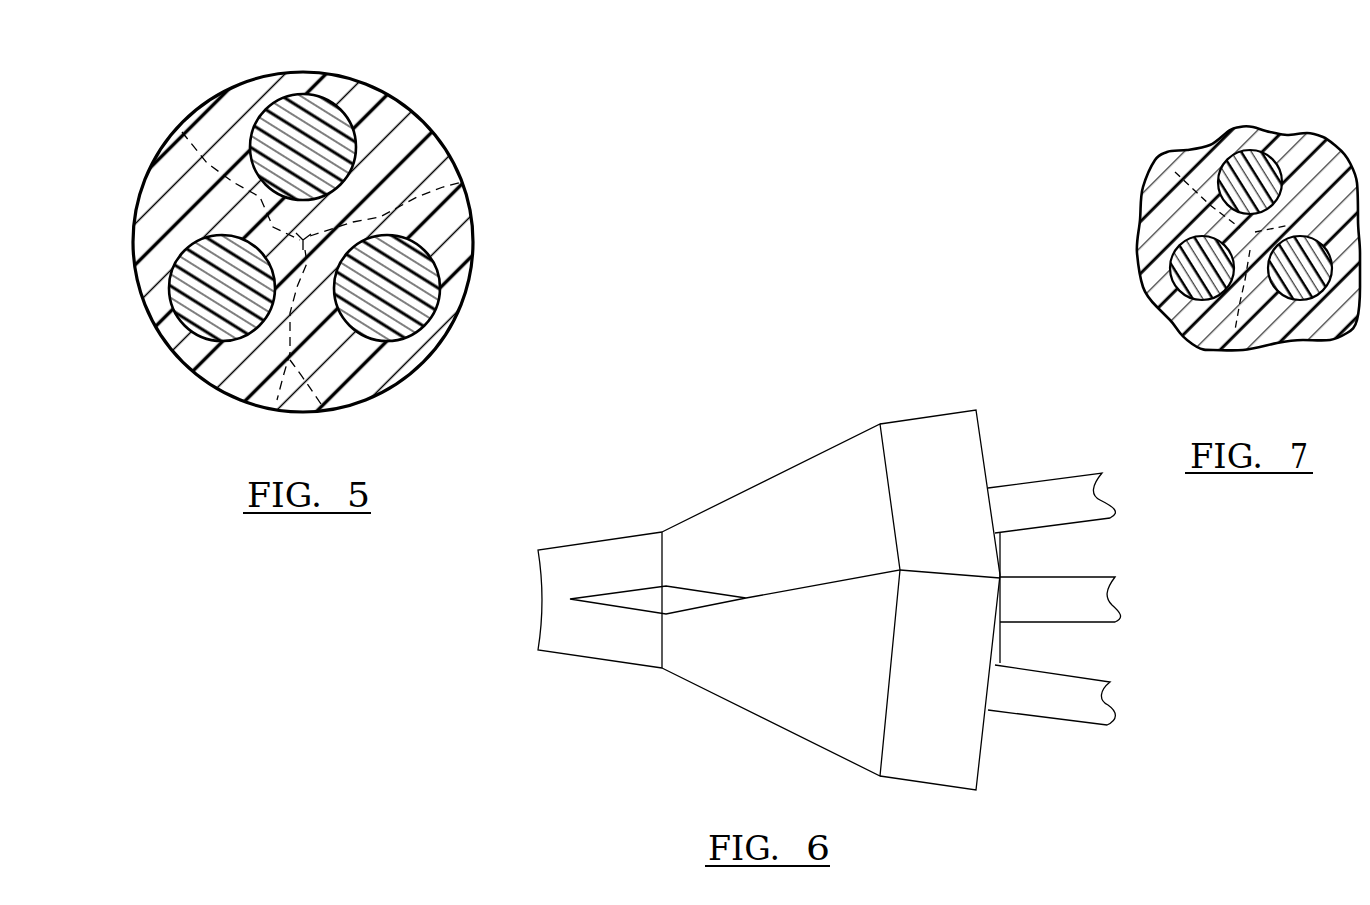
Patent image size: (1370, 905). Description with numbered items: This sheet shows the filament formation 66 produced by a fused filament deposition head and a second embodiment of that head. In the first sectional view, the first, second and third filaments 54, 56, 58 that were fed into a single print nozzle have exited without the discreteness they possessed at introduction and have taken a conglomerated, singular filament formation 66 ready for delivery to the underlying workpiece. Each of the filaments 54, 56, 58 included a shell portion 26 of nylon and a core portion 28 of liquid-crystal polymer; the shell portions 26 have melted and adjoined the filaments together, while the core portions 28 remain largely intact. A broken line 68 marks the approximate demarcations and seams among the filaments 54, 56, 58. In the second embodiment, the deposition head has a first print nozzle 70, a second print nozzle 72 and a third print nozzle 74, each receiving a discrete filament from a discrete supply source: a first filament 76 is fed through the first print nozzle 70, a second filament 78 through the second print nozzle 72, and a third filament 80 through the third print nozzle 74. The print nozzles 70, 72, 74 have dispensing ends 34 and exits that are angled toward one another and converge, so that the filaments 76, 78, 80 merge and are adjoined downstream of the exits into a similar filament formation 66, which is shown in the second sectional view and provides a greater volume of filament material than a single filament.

In FIG. 5, the shell portion 26 is at (433, 160).
In FIG. 7, the shell portion 26 is at (1298, 173).
In FIG. 5, the core portion 28 is at (327, 122).
In FIG. 7, the core portion 28 is at (1263, 165).
In FIG. 6, the dispensing ends 34 is at (660, 530).
In FIG. 5, the first filament 54 is at (256, 102).
In FIG. 5, the second filament 56 is at (444, 255).
In FIG. 5, the third filament 58 is at (217, 365).
In FIG. 5, the filament formation 66 is at (409, 107).
In FIG. 6, the filament formation 66 is at (540, 547).
In FIG. 7, the filament formation 66 is at (1316, 131).
In FIG. 5, the broken line 68 is at (323, 410).
In FIG. 6, the first print nozzle 70 is at (790, 492).
In FIG. 6, the second print nozzle 72 is at (740, 664).
In FIG. 6, the third print nozzle 74 is at (1002, 538).
In FIG. 6, the first filament 76 is at (1063, 477).
In FIG. 7, the first filament 76 is at (1154, 271).
In FIG. 6, the second filament 78 is at (1067, 725).
In FIG. 7, the second filament 78 is at (1236, 142).
In FIG. 6, the third filament 80 is at (1085, 574).
In FIG. 7, the third filament 80 is at (1298, 318).